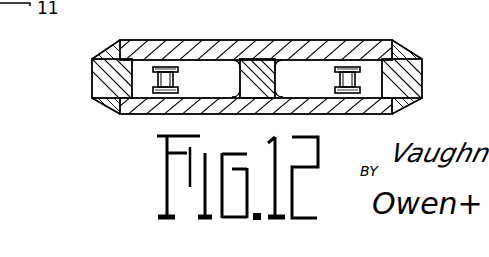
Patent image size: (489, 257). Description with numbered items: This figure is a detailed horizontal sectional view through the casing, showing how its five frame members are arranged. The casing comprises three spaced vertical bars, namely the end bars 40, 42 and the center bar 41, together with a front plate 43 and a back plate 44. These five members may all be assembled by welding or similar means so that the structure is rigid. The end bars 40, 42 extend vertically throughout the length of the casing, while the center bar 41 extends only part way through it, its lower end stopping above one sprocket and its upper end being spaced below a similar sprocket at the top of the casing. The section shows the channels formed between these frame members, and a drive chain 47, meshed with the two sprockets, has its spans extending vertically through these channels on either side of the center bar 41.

The end bar 40 is at (422, 75).
The center bar 41 is at (320, 40).
The end bar 42 is at (92, 78).
The front plate 43 is at (138, 115).
The back plate 44 is at (215, 42).
The drive chain 47 is at (157, 62).